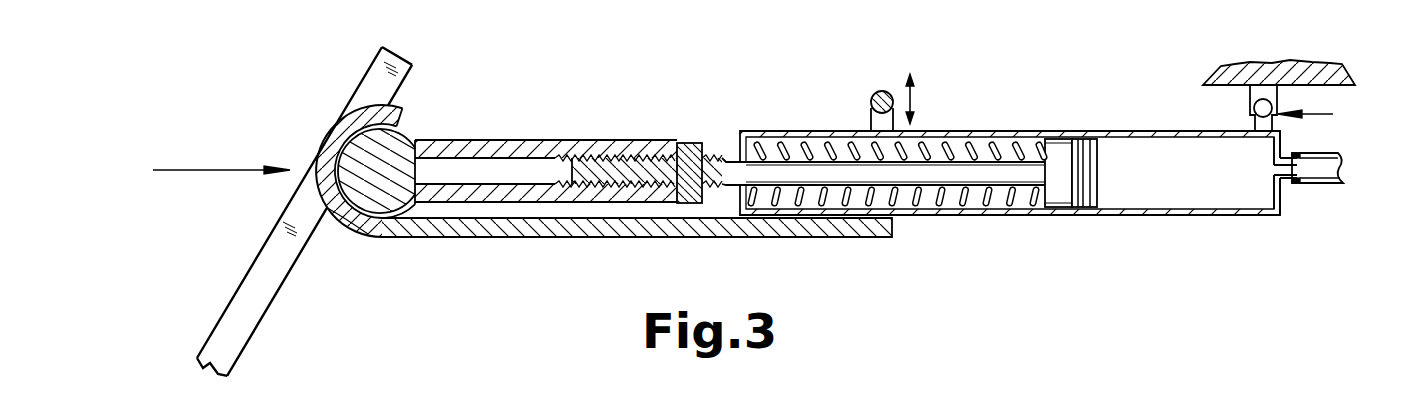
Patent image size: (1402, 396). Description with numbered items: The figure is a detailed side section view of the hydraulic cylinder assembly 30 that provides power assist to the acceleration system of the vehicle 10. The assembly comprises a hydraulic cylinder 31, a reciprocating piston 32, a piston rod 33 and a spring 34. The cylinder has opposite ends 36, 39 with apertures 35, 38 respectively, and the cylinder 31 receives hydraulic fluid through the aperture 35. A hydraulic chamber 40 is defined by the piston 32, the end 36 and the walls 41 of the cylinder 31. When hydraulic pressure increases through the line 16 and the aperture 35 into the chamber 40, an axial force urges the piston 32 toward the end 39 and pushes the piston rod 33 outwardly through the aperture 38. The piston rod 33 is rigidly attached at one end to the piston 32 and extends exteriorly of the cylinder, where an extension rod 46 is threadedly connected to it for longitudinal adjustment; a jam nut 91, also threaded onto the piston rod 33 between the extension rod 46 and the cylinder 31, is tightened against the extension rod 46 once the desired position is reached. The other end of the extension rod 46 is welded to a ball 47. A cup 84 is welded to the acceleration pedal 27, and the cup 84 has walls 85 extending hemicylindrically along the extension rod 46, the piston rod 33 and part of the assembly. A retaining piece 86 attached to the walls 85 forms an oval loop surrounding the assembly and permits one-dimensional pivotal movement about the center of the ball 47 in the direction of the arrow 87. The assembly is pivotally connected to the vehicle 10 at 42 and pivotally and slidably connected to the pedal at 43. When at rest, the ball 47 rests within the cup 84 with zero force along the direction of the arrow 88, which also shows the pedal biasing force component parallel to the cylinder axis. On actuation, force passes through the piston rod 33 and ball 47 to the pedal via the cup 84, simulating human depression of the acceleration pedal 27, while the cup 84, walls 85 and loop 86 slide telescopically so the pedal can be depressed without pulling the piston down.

The vehicle 10 is at (1257, 62).
The line 16 is at (1346, 185).
The acceleration pedal 27 is at (264, 253).
The hydraulic cylinder assembly 30 is at (1059, 146).
The hydraulic cylinder 31 is at (807, 130).
The reciprocating piston 32 is at (1063, 197).
The piston rod 33 is at (617, 147).
The spring 34 is at (1008, 202).
The aperture 35 is at (1305, 168).
The end 36 is at (1270, 205).
The aperture 38 is at (737, 160).
The end 39 is at (756, 193).
The hydraulic chamber 40 is at (1137, 200).
The walls 41 is at (1172, 131).
The pivotal connection 42 is at (1306, 111).
The pivotal and slidable connection 43 is at (580, 125).
The extension rod 46 is at (580, 147).
The ball 47 is at (392, 162).
The cup 84 is at (365, 231).
The walls 85 is at (466, 228).
The retaining piece 86 is at (878, 120).
The arrow 87 is at (924, 99).
The arrow 88 is at (244, 168).
The jam nut 91 is at (688, 147).